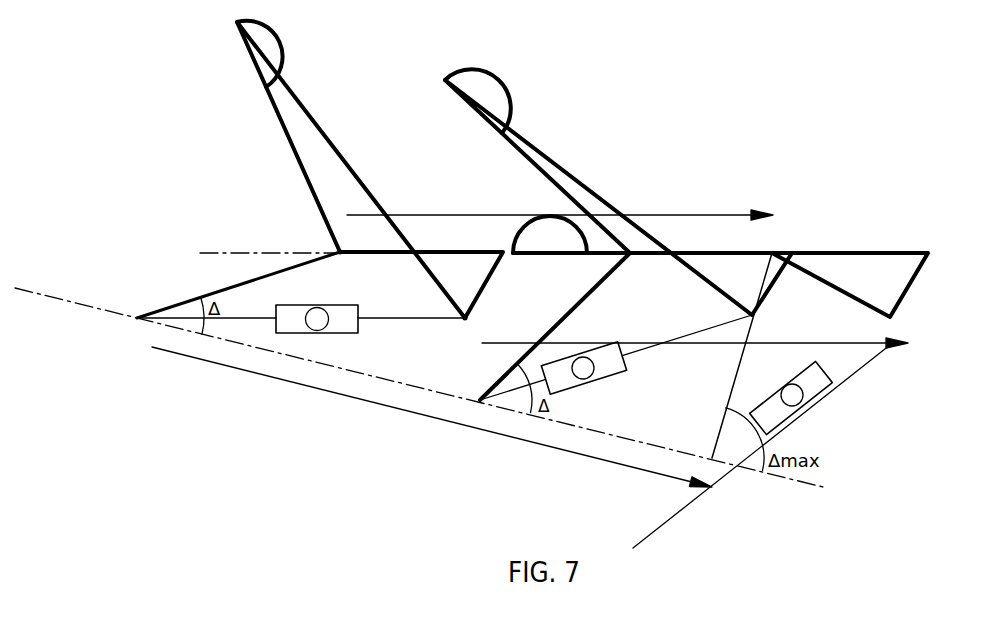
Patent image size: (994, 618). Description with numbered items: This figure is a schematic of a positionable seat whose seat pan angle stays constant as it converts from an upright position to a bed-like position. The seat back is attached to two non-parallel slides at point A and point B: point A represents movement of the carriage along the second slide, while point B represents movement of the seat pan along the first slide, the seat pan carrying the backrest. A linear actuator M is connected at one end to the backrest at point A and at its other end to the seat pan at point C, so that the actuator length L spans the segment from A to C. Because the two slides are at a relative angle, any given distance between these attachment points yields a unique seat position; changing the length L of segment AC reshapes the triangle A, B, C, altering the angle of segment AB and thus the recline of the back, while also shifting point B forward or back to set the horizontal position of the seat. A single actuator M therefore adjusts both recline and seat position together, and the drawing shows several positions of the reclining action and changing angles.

The point A is at (453, 355).
The point B is at (348, 243).
The point C is at (471, 329).
The motor link / actuator length L is at (516, 431).
The linear actuator M is at (554, 370).